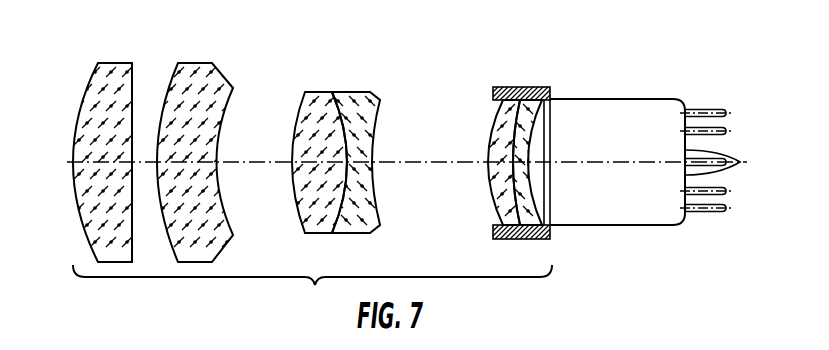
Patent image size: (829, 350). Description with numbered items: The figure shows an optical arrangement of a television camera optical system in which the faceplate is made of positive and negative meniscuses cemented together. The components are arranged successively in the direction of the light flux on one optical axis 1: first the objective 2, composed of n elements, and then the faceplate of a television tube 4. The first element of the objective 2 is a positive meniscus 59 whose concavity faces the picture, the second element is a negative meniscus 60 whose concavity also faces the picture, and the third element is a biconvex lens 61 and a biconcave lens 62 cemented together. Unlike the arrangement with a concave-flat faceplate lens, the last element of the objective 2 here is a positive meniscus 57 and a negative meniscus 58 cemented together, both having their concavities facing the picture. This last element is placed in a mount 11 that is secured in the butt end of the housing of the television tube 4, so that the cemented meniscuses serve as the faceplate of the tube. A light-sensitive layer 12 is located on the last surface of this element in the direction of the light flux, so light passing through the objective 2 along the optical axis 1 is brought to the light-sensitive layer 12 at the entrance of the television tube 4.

The optical axis 1 is at (441, 165).
The objective 2 is at (312, 291).
The television tube 4 is at (593, 107).
The mount 11 is at (500, 86).
The light-sensitive layer 12 is at (535, 203).
The positive meniscus 57 is at (517, 87).
The negative meniscus 58 is at (540, 87).
The positive meniscus 59 is at (112, 73).
The negative meniscus 60 is at (192, 75).
The biconvex lens 61 is at (313, 102).
The biconcave lens 62 is at (358, 90).